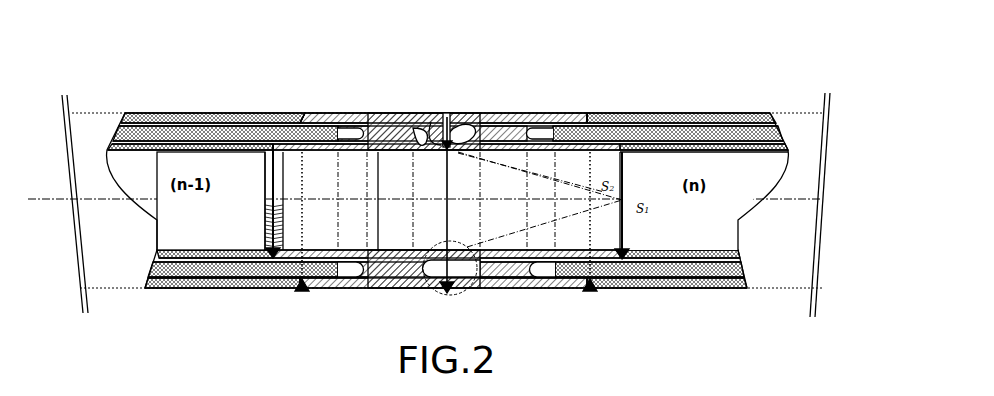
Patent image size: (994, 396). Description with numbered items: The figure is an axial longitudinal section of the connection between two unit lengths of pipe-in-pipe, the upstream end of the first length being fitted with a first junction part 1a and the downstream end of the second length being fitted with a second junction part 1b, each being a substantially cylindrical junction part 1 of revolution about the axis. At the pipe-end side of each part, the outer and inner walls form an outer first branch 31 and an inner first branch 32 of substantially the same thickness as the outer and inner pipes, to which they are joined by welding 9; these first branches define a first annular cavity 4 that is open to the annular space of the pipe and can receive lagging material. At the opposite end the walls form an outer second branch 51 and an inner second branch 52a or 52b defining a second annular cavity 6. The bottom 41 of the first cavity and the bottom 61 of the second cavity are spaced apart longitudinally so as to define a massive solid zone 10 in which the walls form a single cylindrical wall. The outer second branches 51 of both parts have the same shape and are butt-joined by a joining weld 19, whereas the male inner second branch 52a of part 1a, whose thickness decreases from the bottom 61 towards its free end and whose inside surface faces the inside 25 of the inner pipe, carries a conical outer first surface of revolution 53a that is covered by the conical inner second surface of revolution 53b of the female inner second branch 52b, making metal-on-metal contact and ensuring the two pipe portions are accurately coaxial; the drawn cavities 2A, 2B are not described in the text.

The junction part 1 is at (700, 37).
The first junction part 1a is at (396, 99).
The second junction part 1b is at (511, 99).
The connecting element 2A is at (557, 328).
The connecting element 2B is at (487, 284).
The outer first branch 31 is at (584, 110).
The inner first branch 32 is at (635, 172).
The first annular cavity 4 is at (336, 110).
The bottom of first cavity 41 is at (357, 110).
The outer second branch 51 is at (412, 289).
The inner second branch of first junction part 52a is at (432, 149).
The inner second branch of second junction part 52b is at (460, 151).
The outer first surface of revolution 53a is at (447, 110).
The inner second surface of revolution 53b is at (487, 102).
The second annular cavity 6 is at (426, 110).
The bottom of second cavity 61 is at (415, 130).
The welding 9 is at (303, 292).
The massive solid zone 10 is at (532, 110).
The joining weld 19 is at (450, 295).
The inside of inner pipe 25 is at (406, 226).